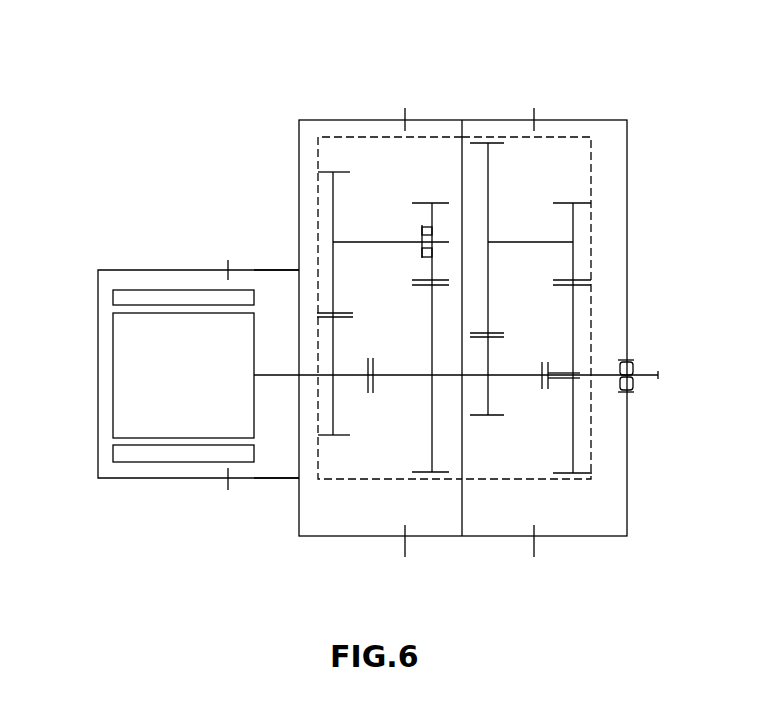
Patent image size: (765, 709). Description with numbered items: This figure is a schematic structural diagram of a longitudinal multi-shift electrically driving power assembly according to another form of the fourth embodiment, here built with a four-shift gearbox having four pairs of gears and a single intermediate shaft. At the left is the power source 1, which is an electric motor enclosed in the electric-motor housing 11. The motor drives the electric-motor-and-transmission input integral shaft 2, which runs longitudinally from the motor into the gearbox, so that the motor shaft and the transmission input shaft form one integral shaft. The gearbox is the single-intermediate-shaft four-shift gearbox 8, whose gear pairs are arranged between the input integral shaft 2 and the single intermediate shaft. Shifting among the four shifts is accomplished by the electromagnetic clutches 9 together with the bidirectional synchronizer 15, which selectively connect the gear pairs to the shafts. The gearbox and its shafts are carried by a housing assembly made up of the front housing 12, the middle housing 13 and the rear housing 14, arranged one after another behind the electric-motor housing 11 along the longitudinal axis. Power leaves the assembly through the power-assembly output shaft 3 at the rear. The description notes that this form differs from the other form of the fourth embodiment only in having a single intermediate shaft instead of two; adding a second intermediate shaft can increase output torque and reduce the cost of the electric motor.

The power source 1 is at (217, 345).
The electric-motor-and-transmission input integral shaft 2 is at (312, 377).
The power-assembly output shaft 3 is at (657, 375).
The single-intermediate-shaft four-shift gearbox 8 is at (430, 136).
The electromagnetic clutches 9 is at (420, 233).
The electric-motor housing 11 is at (169, 270).
The front housing 12 is at (273, 270).
The middle housing 13 is at (521, 120).
The rear housing 14 is at (582, 120).
The bidirectional synchronizer 15 is at (543, 389).